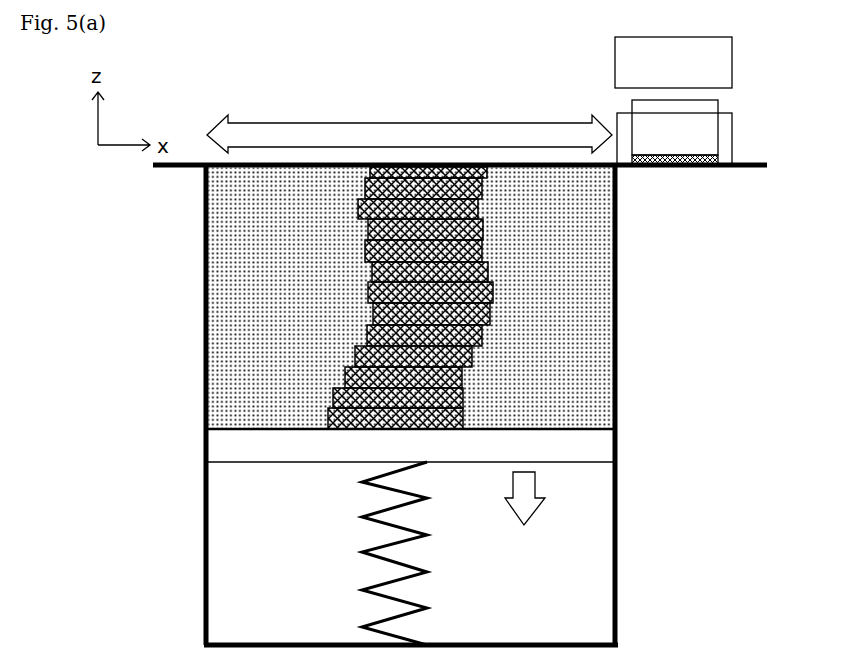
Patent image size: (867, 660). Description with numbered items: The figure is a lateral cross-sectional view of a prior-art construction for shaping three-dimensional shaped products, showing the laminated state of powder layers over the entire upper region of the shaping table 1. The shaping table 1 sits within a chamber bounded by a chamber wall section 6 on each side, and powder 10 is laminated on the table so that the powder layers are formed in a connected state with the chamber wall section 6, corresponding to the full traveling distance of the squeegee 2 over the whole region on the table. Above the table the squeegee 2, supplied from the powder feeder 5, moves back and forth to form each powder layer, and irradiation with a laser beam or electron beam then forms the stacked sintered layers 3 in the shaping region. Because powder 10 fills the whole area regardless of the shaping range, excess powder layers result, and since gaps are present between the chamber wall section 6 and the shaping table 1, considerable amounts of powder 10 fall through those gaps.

The shaping table 1 is at (558, 447).
The squeegee 2 is at (692, 136).
The sintered layer 3 is at (521, 228).
The powder feeder 5 is at (692, 68).
The chamber wall section 6 is at (205, 333).
The powder 10 is at (293, 251).